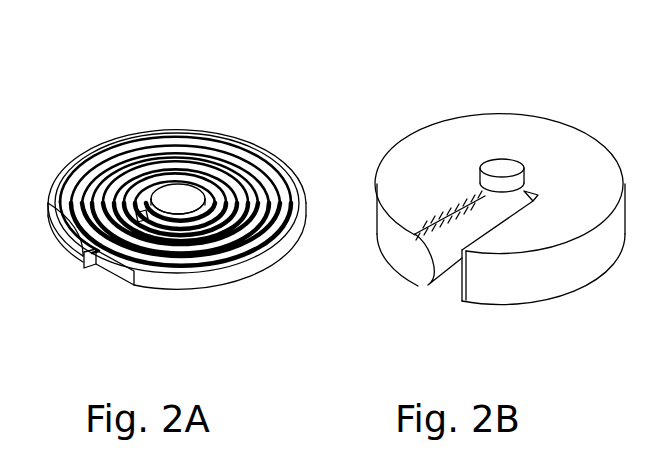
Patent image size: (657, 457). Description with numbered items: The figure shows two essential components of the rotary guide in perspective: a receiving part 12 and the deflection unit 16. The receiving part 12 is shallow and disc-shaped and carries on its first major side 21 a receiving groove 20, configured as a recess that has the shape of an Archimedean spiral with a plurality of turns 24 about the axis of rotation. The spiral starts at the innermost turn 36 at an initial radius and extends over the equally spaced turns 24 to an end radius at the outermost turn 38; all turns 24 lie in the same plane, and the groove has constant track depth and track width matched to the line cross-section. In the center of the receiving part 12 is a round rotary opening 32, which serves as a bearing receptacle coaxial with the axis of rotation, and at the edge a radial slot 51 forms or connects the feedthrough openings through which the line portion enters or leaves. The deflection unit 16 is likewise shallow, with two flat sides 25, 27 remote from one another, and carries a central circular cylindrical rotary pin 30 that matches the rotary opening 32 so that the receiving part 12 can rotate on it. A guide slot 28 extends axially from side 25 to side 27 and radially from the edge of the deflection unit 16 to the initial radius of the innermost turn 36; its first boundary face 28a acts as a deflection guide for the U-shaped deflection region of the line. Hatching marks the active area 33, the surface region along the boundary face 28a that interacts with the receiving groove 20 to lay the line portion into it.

In FIG. 2A, the receiving part 12 is at (137, 92).
In FIG. 2A, the receiving groove 20 is at (293, 164).
In FIG. 2A, the first major side 21 is at (147, 274).
In FIG. 2A, the turns 24 is at (73, 252).
In FIG. 2A, the rotary opening 32 is at (179, 204).
In FIG. 2A, the innermost turn 36 is at (257, 155).
In FIG. 2A, the outermost turn 38 is at (56, 180).
In FIG. 2A, the radial slot 51 is at (120, 262).
In FIG. 2B, the deflection unit 16 is at (487, 94).
In FIG. 2B, the first side 25 is at (567, 150).
In FIG. 2B, the second side 27 is at (497, 305).
In FIG. 2B, the guide slot 28 is at (451, 288).
In FIG. 2B, the first boundary face 28a is at (448, 257).
In FIG. 2B, the rotary pin 30 is at (499, 166).
In FIG. 2B, the active area 33 is at (458, 198).